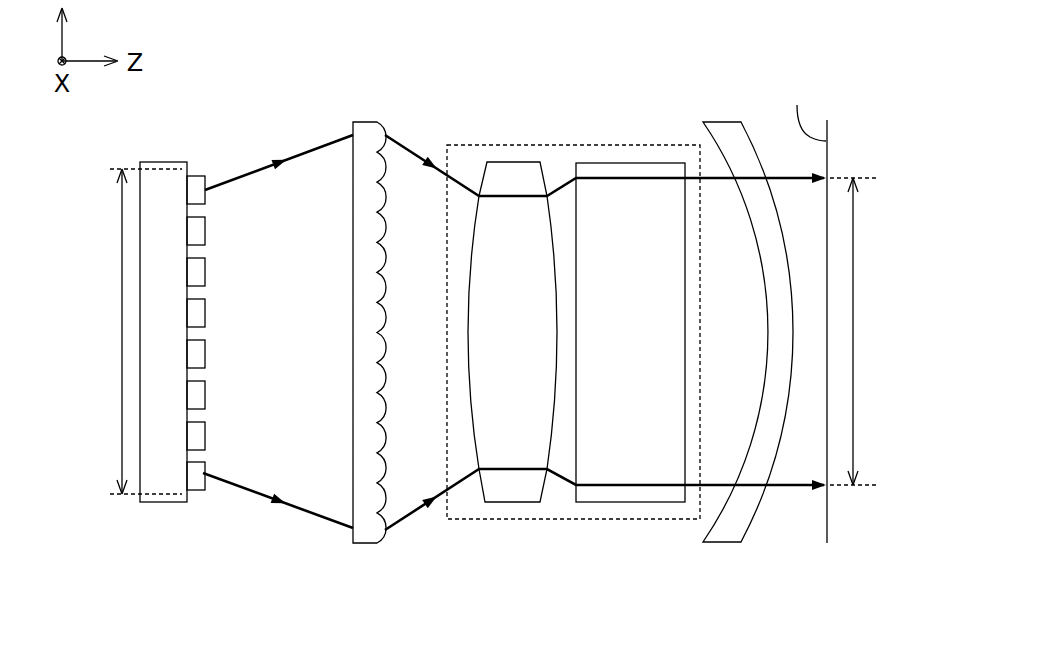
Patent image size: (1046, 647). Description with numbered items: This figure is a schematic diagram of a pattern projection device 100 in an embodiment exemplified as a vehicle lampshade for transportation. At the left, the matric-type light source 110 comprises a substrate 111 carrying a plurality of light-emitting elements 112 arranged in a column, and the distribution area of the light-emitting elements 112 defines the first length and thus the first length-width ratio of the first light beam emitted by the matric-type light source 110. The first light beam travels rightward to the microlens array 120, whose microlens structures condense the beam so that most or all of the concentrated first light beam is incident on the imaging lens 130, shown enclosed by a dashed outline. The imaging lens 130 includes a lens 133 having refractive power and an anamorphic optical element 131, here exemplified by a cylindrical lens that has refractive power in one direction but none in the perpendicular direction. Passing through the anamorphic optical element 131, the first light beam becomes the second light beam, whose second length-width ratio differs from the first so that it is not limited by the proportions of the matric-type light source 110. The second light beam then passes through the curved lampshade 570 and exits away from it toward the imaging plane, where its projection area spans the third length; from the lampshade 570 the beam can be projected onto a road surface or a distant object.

The pattern projection device 100 is at (162, 133).
The matric-type light source 110 is at (140, 545).
The substrate 111 is at (166, 503).
The light-emitting elements 112 is at (199, 488).
The microlens array 120 is at (363, 544).
The imaging lens 130 is at (579, 143).
The anamorphic optical element 131 is at (661, 504).
The lens 133 is at (515, 504).
The lampshade 570 is at (720, 541).